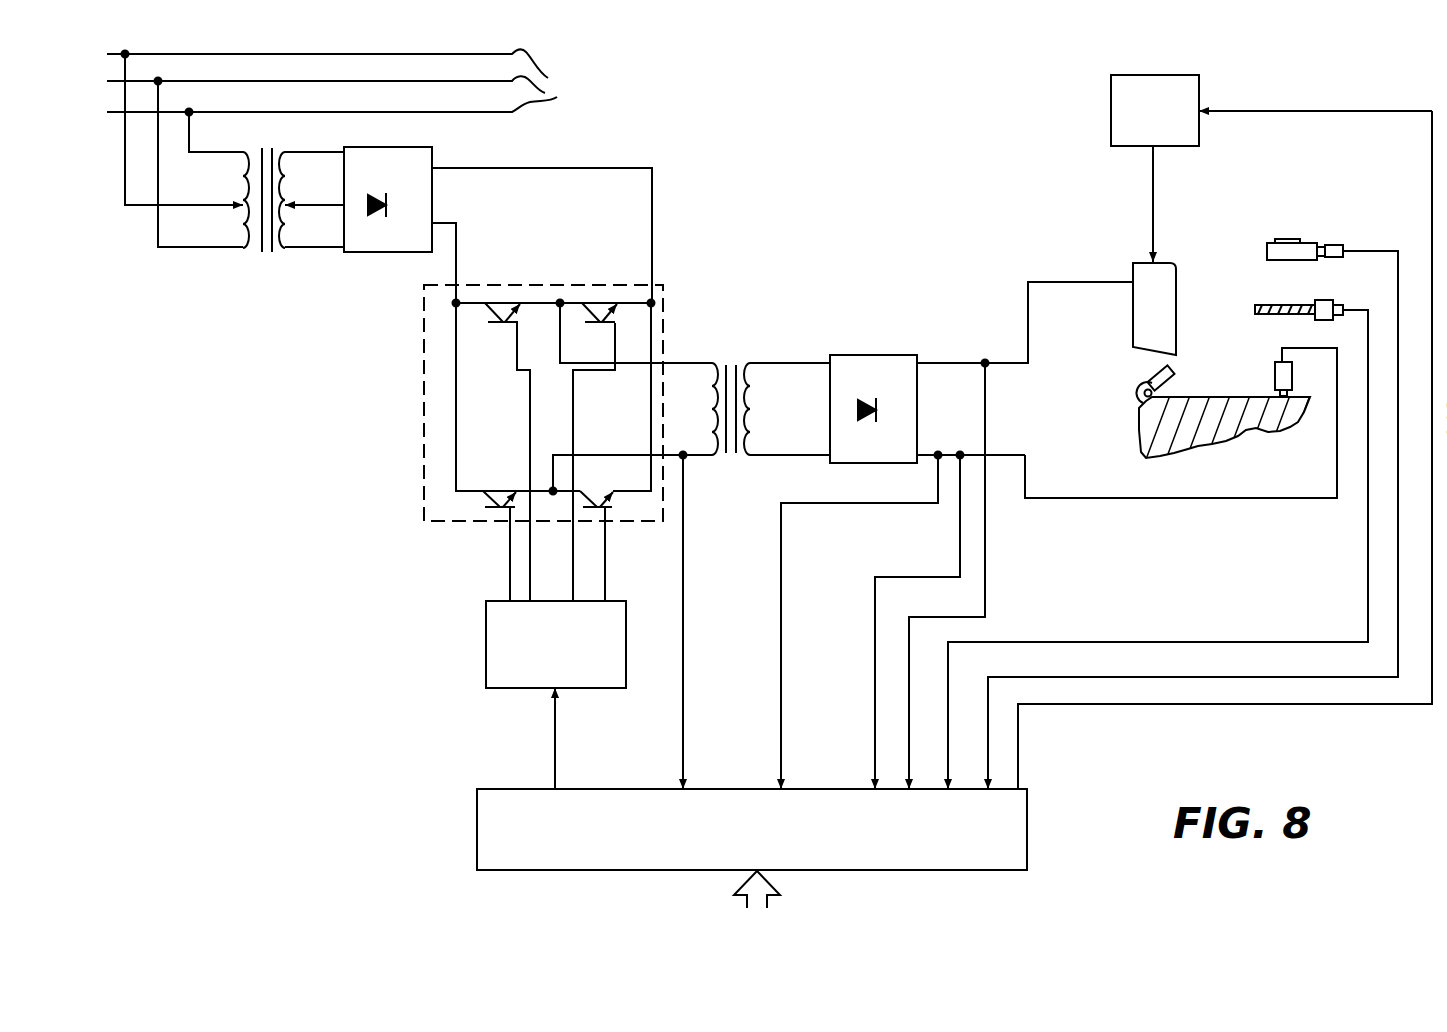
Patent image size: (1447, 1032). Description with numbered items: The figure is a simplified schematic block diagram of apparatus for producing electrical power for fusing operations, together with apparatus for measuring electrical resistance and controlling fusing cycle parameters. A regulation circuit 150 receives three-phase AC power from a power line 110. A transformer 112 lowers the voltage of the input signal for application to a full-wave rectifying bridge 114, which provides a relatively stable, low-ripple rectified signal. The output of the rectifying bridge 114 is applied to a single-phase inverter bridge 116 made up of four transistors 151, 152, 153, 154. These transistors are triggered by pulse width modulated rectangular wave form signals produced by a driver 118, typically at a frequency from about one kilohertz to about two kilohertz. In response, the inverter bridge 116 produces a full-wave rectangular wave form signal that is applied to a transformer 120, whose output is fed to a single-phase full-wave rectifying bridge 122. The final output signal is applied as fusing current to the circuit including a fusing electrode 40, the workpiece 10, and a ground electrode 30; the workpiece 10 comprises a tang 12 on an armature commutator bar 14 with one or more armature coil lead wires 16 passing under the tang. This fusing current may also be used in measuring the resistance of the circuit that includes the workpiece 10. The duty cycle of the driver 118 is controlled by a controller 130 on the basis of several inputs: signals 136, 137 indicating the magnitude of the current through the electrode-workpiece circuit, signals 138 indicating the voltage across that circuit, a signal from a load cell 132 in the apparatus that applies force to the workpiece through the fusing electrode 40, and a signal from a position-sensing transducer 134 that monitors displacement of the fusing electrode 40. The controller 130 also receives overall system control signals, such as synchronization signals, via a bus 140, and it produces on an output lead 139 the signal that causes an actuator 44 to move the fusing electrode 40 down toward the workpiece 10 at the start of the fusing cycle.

The workpiece 10 is at (1120, 456).
The tang 12 is at (1142, 373).
The armature commutator bar 14 is at (1241, 436).
The armature coil lead wires 16 is at (1153, 393).
The ground electrode 30 is at (1274, 377).
The fusing electrode 40 is at (1133, 323).
The actuator 44 is at (1110, 111).
The power line 110 is at (351, 148).
The transformer 112 is at (263, 253).
The full-wave rectifying bridge 114 is at (434, 159).
The single-phase inverter bridge 116 is at (664, 331).
The driver 118 is at (490, 662).
The transformer 120 is at (728, 365).
The single-phase full-wave rectifying bridge 122 is at (872, 355).
The controller 130 is at (1029, 831).
The load cell 132 is at (1313, 243).
The position-sensing transducer 134 is at (1326, 298).
The current signal 136 is at (783, 550).
The current signal 137 is at (685, 607).
The voltage signals 138 is at (960, 564).
The output lead 139 is at (1264, 706).
The bus 140 is at (770, 900).
The regulation circuit 150 is at (357, 581).
The transistor 151 is at (494, 325).
The transistor 152 is at (595, 321).
The transistor 153 is at (494, 470).
The transistor 154 is at (606, 502).